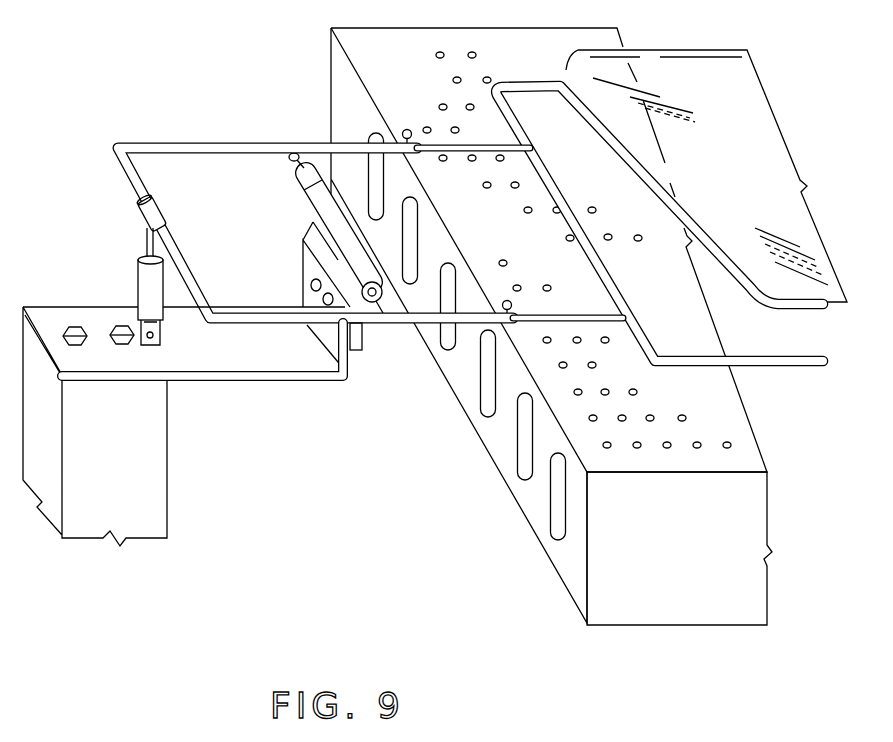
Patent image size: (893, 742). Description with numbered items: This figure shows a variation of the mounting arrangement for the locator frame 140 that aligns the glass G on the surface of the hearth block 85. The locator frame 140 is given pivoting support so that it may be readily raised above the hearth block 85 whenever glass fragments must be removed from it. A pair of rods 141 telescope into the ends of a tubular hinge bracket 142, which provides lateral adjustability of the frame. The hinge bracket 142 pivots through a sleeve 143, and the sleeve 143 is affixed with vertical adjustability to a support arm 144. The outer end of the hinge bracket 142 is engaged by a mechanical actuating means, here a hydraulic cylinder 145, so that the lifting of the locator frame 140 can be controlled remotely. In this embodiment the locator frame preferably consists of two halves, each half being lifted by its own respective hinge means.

The hearth block 85 is at (331, 48).
The glass G is at (706, 62).
The locator frame 140 is at (745, 293).
The rods 141 is at (457, 152).
The tubular hinge bracket 142 is at (215, 146).
The sleeve 143 is at (295, 187).
The support arm 144 is at (237, 378).
The hydraulic cylinder 145 is at (138, 290).